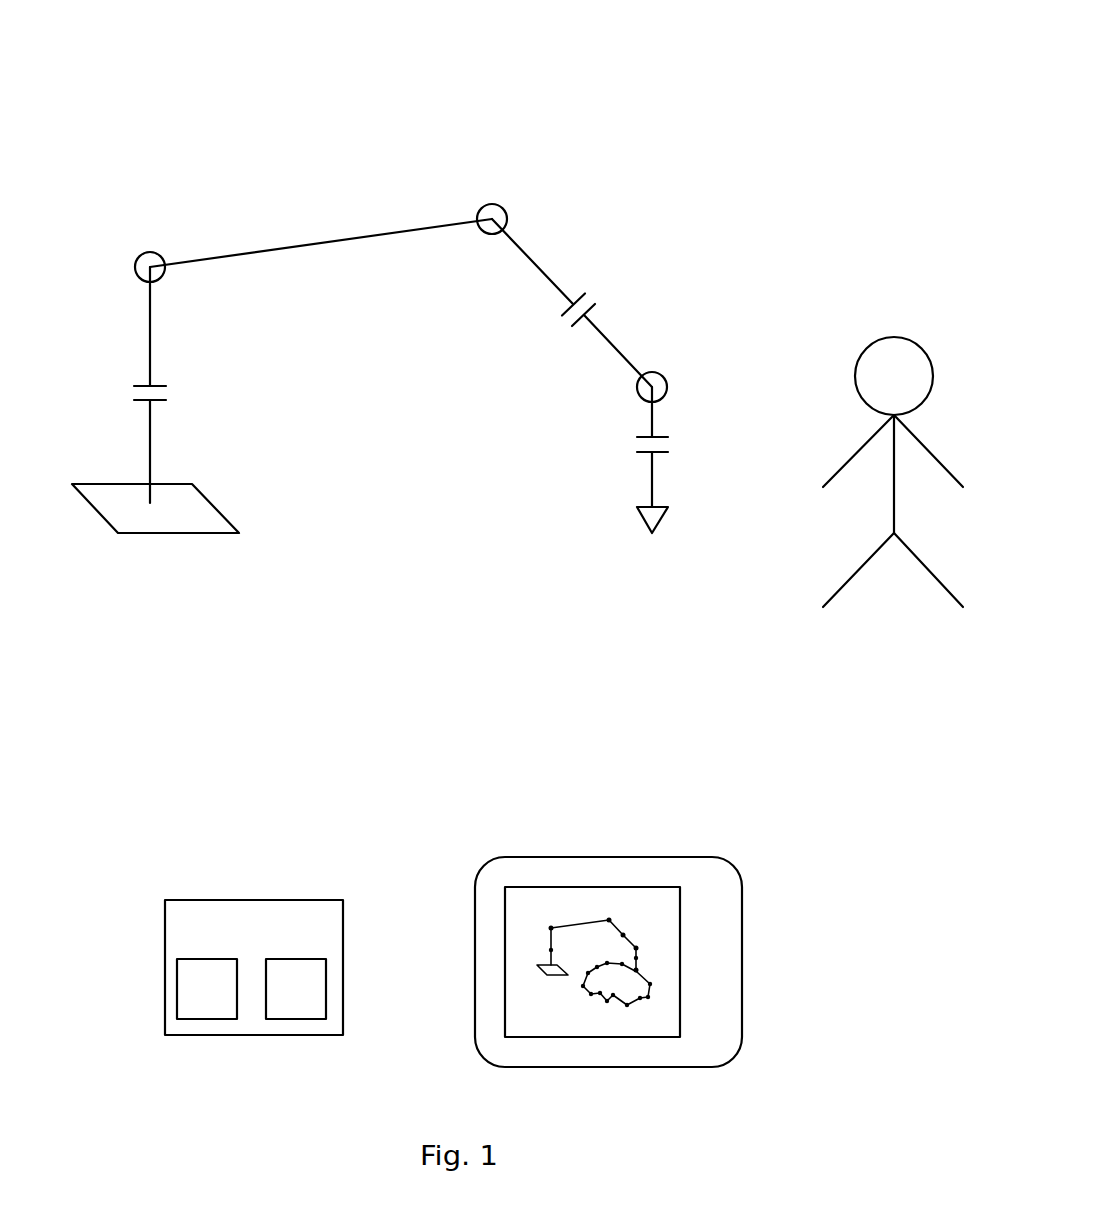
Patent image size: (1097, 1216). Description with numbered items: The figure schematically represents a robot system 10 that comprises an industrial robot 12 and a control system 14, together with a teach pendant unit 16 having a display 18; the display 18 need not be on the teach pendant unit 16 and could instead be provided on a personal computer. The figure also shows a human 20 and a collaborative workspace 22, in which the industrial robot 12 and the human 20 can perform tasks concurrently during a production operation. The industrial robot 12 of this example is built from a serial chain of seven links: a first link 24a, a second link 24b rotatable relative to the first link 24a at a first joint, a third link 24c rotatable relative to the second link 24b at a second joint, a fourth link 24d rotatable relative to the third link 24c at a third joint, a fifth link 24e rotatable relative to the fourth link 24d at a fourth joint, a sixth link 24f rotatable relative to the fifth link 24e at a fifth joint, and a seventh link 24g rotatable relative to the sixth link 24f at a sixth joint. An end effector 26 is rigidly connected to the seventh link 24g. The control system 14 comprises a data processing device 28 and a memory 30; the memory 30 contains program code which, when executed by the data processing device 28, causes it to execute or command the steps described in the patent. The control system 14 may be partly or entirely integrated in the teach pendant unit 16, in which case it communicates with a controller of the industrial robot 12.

The robot system 10 is at (740, 66).
The industrial robot 12 is at (213, 167).
The control system 14 is at (264, 941).
The teach pendant unit 16 is at (715, 908).
The display 18 is at (533, 919).
The human 20 is at (845, 306).
The collaborative workspace 22 is at (594, 633).
The first link 24a is at (148, 432).
The second link 24b is at (148, 322).
The third link 24c is at (313, 242).
The fourth link 24d is at (532, 258).
The fifth link 24e is at (617, 344).
The sixth link 24f is at (655, 410).
The seventh link 24g is at (653, 472).
The end effector 26 is at (660, 518).
The data processing device 28 is at (222, 1001).
The memory 30 is at (311, 1001).